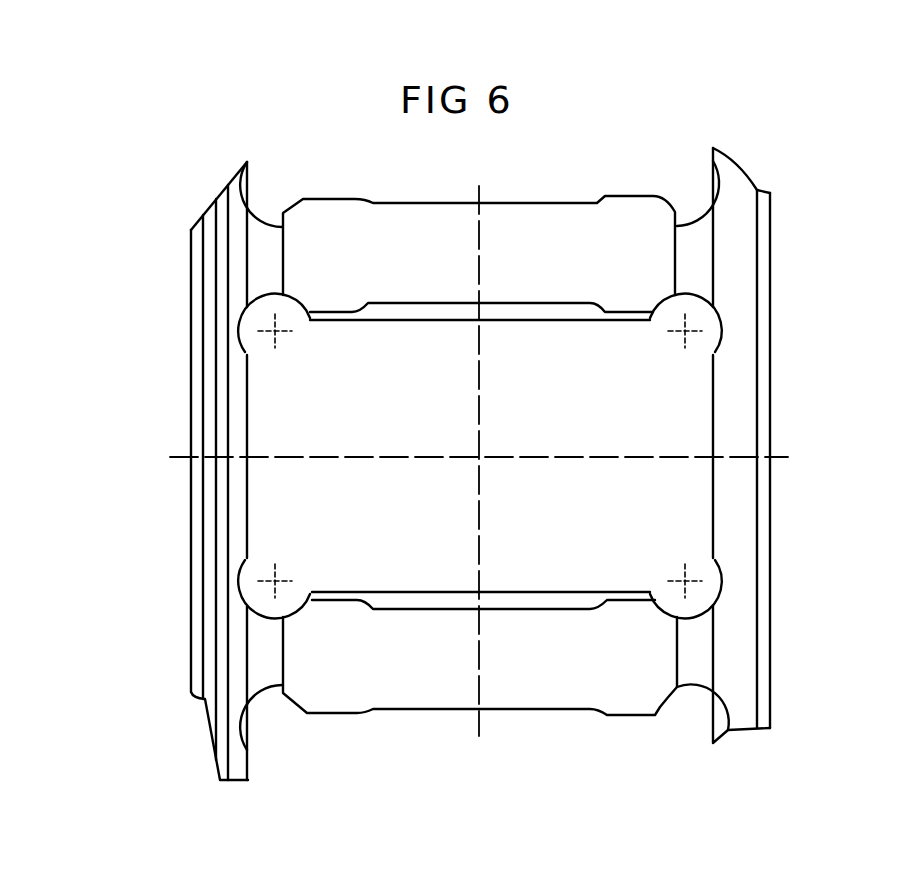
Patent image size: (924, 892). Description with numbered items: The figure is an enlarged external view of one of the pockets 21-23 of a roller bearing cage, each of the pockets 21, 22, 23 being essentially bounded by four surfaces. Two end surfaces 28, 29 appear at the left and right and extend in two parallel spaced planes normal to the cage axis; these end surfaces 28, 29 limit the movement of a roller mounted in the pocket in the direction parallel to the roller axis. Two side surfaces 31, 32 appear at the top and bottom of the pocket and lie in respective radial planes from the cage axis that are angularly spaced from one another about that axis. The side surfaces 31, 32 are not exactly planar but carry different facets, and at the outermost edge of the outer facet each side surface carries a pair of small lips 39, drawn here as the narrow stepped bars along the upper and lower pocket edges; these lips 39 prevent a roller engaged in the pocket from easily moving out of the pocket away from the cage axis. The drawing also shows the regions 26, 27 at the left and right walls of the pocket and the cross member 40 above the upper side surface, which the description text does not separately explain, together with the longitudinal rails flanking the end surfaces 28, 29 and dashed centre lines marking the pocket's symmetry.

The pocket 21 is at (479, 461).
The pocket 22 is at (479, 461).
The pocket 23 is at (460, 523).
The right side wall 26 is at (713, 428).
The left side wall 27 is at (252, 428).
The end surface 28 is at (257, 497).
The end surface 29 is at (713, 493).
The side surface 31 is at (518, 322).
The side surface 32 is at (522, 590).
The lips 39 is at (623, 315).
The upper cross member 40 is at (547, 220).